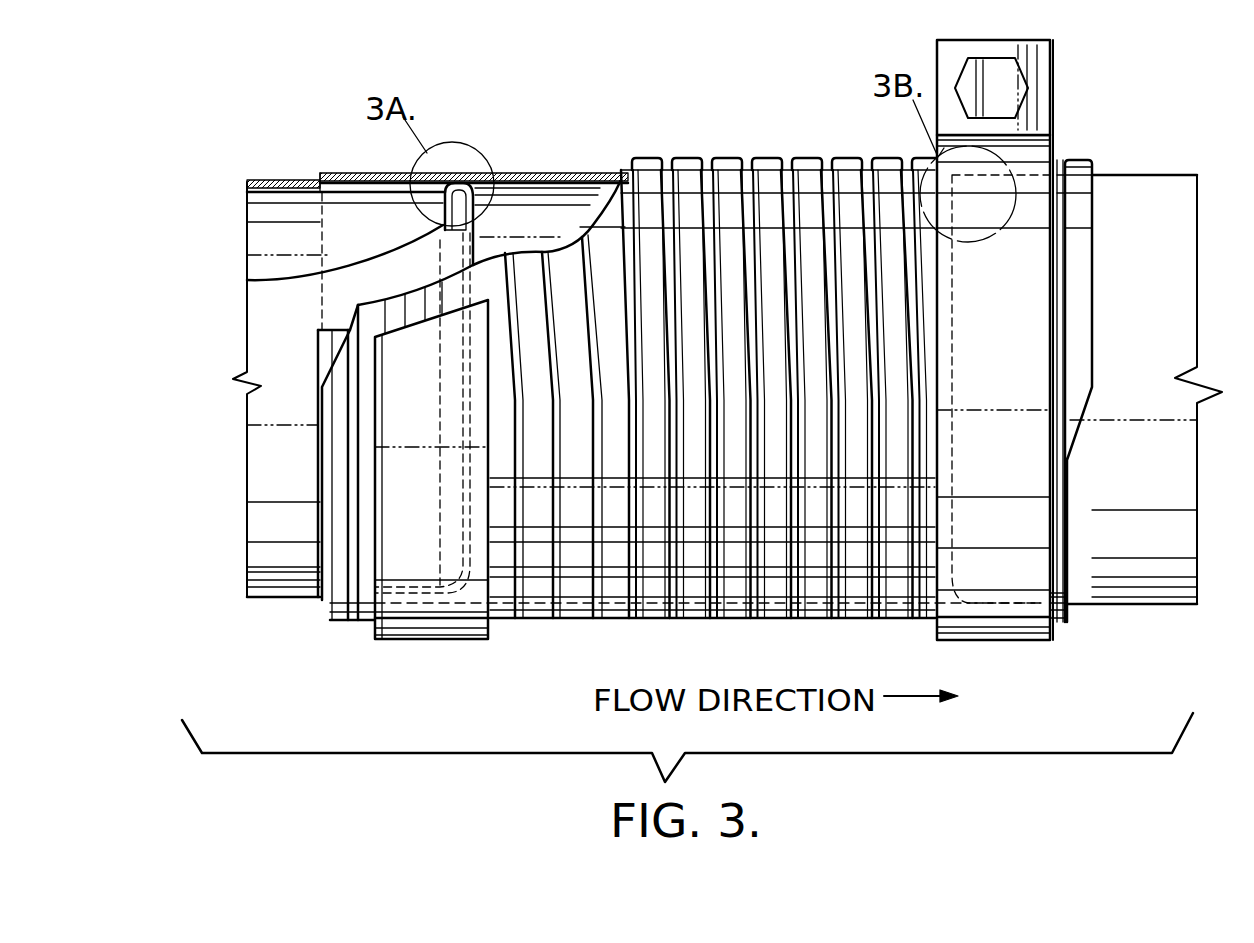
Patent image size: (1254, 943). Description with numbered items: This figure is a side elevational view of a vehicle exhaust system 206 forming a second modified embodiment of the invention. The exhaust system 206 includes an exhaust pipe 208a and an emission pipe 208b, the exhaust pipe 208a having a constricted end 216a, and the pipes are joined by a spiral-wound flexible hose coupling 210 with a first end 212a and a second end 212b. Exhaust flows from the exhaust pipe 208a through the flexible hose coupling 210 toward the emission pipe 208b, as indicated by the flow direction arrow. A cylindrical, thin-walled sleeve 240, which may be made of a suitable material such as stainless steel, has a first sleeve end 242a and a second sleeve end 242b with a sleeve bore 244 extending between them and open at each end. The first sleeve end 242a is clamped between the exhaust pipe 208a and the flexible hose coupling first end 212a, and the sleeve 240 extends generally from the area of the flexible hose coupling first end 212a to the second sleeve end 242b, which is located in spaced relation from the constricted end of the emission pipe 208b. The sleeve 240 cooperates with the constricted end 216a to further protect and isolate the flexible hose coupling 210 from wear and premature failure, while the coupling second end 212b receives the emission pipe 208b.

The exhaust system 206 is at (392, 74).
The exhaust pipe 208a is at (285, 592).
The emission pipe 208b is at (1148, 608).
The flexible hose coupling 210 is at (847, 158).
The flexible hose coupling first end 212a is at (333, 360).
The flexible hose coupling second end 212b is at (1065, 468).
The constricted end 216a is at (496, 178).
The sleeve 240 is at (355, 172).
The first sleeve end 242a is at (322, 537).
The second sleeve end 242b is at (970, 618).
The sleeve bore 244 is at (535, 192).